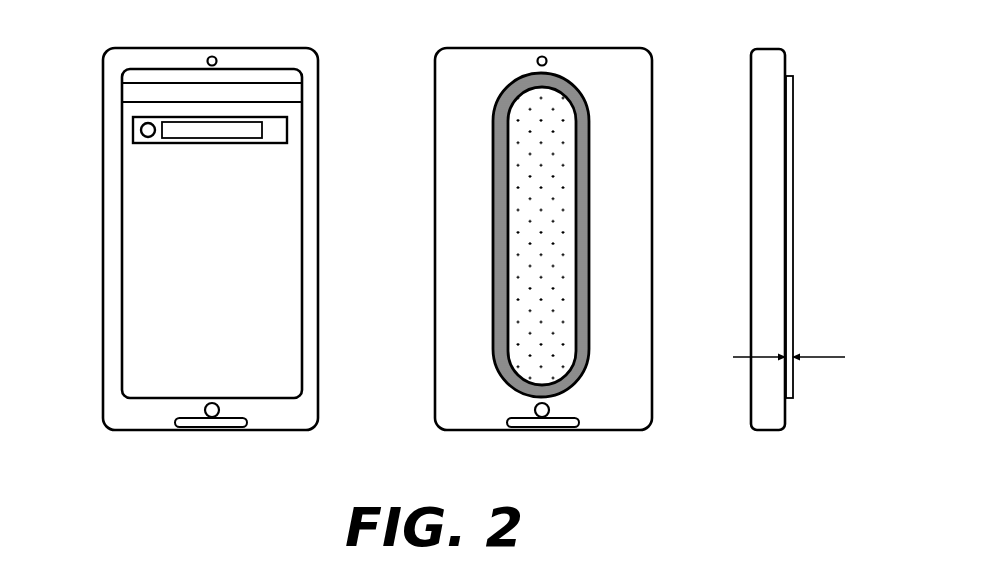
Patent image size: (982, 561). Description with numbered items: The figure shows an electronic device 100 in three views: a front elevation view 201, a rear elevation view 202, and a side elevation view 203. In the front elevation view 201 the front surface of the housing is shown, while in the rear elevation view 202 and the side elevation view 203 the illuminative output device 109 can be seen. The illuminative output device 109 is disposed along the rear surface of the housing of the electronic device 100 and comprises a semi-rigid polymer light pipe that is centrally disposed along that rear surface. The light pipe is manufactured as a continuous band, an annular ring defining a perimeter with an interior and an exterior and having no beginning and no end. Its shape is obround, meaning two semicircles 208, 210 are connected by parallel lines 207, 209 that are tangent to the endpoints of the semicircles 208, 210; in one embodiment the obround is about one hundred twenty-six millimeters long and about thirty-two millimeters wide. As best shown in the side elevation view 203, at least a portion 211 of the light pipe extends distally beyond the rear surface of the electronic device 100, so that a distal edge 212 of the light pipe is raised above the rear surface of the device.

The electronic device 100 is at (85, 101).
The illuminative output device 109 is at (487, 111).
The front elevation view 201 is at (85, 376).
The rear elevation view 202 is at (412, 378).
The side elevation view 203 is at (718, 378).
The parallel line 207 is at (495, 222).
The semicircle 208 is at (561, 78).
The parallel line 209 is at (589, 222).
The semicircle 210 is at (577, 383).
The portion 211 is at (812, 357).
The distal edge 212 is at (795, 375).